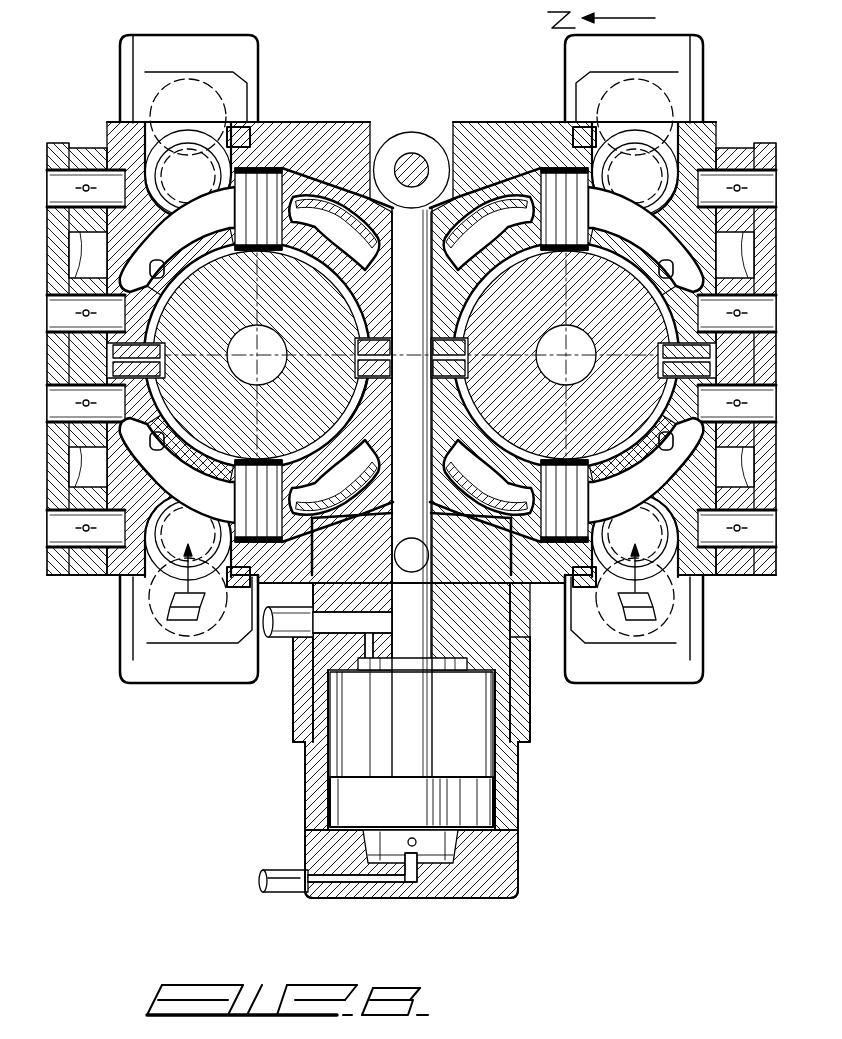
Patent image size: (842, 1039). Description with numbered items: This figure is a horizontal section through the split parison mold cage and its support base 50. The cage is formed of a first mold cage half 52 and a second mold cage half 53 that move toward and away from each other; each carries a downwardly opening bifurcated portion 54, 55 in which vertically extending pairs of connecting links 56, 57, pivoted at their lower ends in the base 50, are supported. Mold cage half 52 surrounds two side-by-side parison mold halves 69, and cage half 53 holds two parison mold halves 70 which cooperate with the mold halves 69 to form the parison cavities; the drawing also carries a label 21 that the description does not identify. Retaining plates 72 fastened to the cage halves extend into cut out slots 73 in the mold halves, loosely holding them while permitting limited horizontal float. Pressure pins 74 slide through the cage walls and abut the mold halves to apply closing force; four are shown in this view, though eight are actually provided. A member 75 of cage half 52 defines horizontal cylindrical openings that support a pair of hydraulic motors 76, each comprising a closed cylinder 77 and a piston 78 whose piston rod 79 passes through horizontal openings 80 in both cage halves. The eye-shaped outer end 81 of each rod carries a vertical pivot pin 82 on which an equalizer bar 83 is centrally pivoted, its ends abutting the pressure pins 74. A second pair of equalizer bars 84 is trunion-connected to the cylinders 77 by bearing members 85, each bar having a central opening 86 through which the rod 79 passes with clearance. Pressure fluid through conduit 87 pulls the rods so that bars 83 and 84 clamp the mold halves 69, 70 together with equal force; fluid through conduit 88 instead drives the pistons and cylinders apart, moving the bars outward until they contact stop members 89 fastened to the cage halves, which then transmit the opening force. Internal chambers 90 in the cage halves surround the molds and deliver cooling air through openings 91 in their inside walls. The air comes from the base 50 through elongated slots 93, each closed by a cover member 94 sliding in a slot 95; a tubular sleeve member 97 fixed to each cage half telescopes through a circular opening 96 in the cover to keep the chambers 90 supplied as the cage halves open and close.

The rotor shaft bore 21 is at (600, 367).
The mold cage support base 50 is at (318, 108).
The first mold cage half 52 is at (118, 582).
The second mold cage half 53 is at (478, 124).
The bifurcated portion 54 is at (55, 578).
The bifurcated portion 55 is at (60, 147).
The connecting links 56 is at (85, 470).
The connecting links 57 is at (85, 258).
The parison mold halves 69 is at (411, 355).
The parison mold halves 70 is at (411, 355).
The retaining plates 72 is at (160, 350).
The cut out slots 73 is at (160, 372).
The pressure pins 74 is at (284, 214).
The member 75 is at (300, 735).
The hydraulic motors 76 is at (540, 878).
The closed cylinders 77 is at (518, 832).
The pistons 78 is at (490, 805).
The piston rod 79 is at (425, 722).
The horizontal openings 80 is at (367, 393).
The outer ends 81 is at (430, 140).
The vertical pivot pin 82 is at (410, 153).
The equalizer bar 83 is at (342, 132).
The equalizer bars 84 is at (411, 544).
The bearing members 85 is at (410, 572).
The opening 86 is at (398, 522).
The conduit 87 is at (278, 640).
The conduit 88 is at (283, 868).
The stop members 89 is at (245, 130).
The internal chambers 90 is at (412, 355).
The openings 91 is at (412, 354).
The elongated slots 93 is at (150, 108).
The cover member 94 is at (150, 78).
The slot 95 is at (135, 690).
The circular opening 96 is at (148, 42).
The tubular sleeve member 97 is at (190, 145).